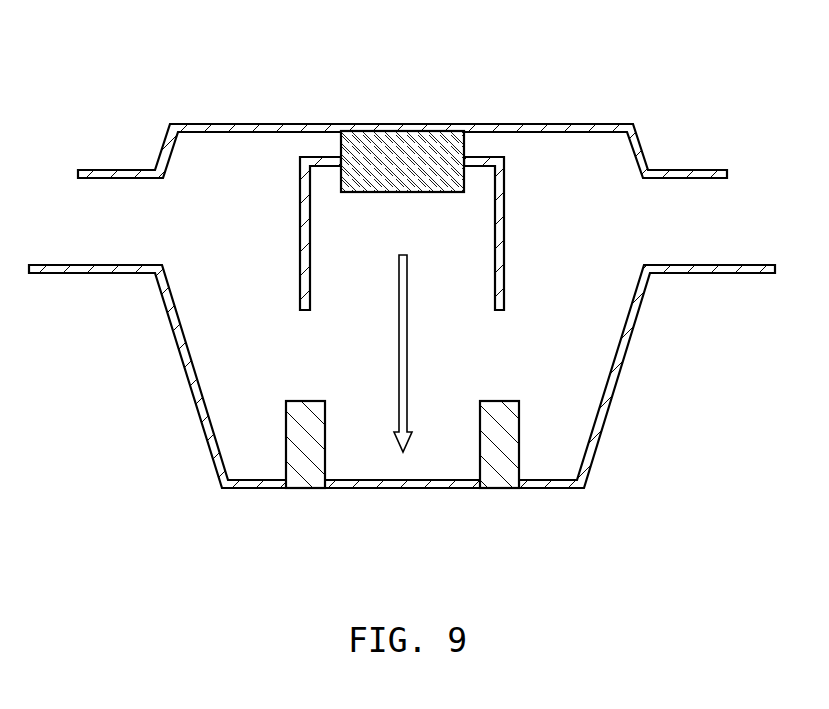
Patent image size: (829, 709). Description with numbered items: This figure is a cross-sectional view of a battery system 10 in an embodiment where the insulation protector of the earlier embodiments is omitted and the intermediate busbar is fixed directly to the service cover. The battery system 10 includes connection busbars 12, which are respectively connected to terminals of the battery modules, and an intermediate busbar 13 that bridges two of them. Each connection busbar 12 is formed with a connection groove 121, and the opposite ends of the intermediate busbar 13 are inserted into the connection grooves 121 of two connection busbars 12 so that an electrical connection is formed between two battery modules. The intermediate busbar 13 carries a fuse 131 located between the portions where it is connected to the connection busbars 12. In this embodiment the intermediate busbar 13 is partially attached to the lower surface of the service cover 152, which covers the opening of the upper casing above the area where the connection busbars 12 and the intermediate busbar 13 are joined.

The battery system 10 is at (791, 48).
The connection busbar 12 is at (97, 268).
The connection groove 121 is at (303, 473).
The intermediate busbar 13 is at (492, 162).
The fuse 131 is at (392, 148).
The service cover 152 is at (222, 128).